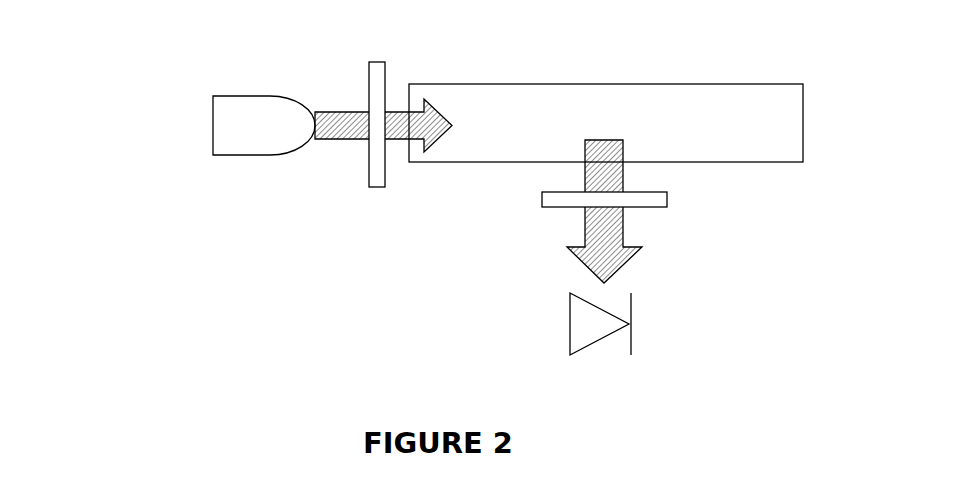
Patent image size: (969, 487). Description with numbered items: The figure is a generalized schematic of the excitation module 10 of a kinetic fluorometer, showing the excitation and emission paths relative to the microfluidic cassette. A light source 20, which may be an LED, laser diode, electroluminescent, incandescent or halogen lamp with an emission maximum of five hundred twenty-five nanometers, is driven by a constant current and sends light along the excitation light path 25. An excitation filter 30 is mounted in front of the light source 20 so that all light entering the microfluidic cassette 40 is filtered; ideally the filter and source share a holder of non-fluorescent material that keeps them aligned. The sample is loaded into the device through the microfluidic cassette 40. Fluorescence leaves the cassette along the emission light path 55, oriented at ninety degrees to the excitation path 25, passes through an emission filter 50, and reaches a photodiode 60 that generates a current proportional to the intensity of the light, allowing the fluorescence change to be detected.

The excitation module 10 is at (137, 71).
The light source 20 is at (243, 114).
The excitation light path 25 is at (338, 111).
The excitation filter 30 is at (376, 171).
The microfluidic cassette 40 is at (766, 106).
The emission filter 50 is at (654, 203).
The emission light path 55 is at (636, 259).
The photodiode 60 is at (569, 325).